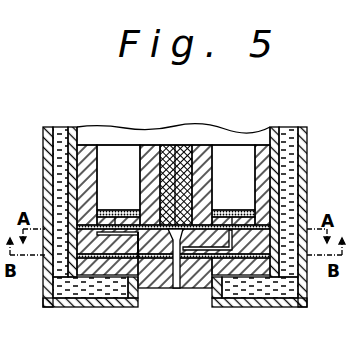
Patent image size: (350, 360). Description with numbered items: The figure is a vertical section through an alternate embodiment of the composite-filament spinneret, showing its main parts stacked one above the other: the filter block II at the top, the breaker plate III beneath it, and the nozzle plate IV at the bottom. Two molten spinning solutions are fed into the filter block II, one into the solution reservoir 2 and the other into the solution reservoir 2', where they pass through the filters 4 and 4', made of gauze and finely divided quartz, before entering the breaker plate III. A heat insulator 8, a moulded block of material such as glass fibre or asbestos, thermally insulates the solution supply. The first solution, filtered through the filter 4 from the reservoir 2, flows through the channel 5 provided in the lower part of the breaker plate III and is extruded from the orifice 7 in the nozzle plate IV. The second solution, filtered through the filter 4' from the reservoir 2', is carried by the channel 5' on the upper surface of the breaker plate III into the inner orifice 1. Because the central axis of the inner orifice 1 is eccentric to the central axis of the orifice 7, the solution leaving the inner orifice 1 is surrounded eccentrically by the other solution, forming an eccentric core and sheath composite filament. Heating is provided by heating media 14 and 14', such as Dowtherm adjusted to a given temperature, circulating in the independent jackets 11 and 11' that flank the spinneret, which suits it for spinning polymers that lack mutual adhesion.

The inner orifice 1 is at (167, 143).
The solution reservoir 2' is at (118, 153).
The solution reservoir 2 is at (233, 153).
The filter 4' is at (88, 153).
The filter 4 is at (207, 153).
The heat insulator 8 is at (181, 147).
The filter block II is at (265, 148).
The breaker plate III is at (278, 238).
The nozzle plate IV is at (201, 285).
The channel 5' is at (127, 292).
The channel 5 is at (220, 291).
The orifice 7 is at (178, 288).
The jacket 11' is at (90, 239).
The jacket 11 is at (259, 239).
The heating medium 14' is at (91, 239).
The heating medium 14 is at (282, 239).